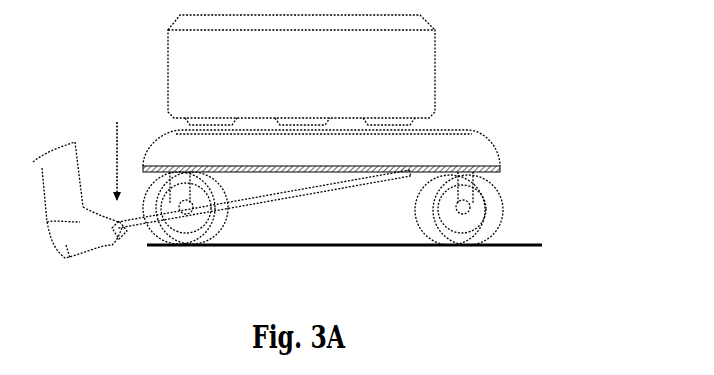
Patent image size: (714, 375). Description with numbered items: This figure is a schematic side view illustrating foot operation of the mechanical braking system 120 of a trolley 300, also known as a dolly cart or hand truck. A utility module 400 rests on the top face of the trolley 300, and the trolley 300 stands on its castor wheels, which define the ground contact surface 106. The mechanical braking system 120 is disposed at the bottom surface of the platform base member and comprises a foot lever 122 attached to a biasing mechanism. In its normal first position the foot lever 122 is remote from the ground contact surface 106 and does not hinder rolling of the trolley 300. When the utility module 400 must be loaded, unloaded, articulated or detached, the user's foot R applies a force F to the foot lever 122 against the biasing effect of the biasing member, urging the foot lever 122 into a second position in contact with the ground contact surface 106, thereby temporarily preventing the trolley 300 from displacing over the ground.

The utility module 400 is at (425, 50).
The trolley 300 is at (489, 141).
The mechanical braking system 120 is at (265, 211).
The foot lever 122 is at (125, 234).
The ground contact surface 106 is at (520, 243).
The force F is at (115, 142).
The user's foot R is at (70, 245).